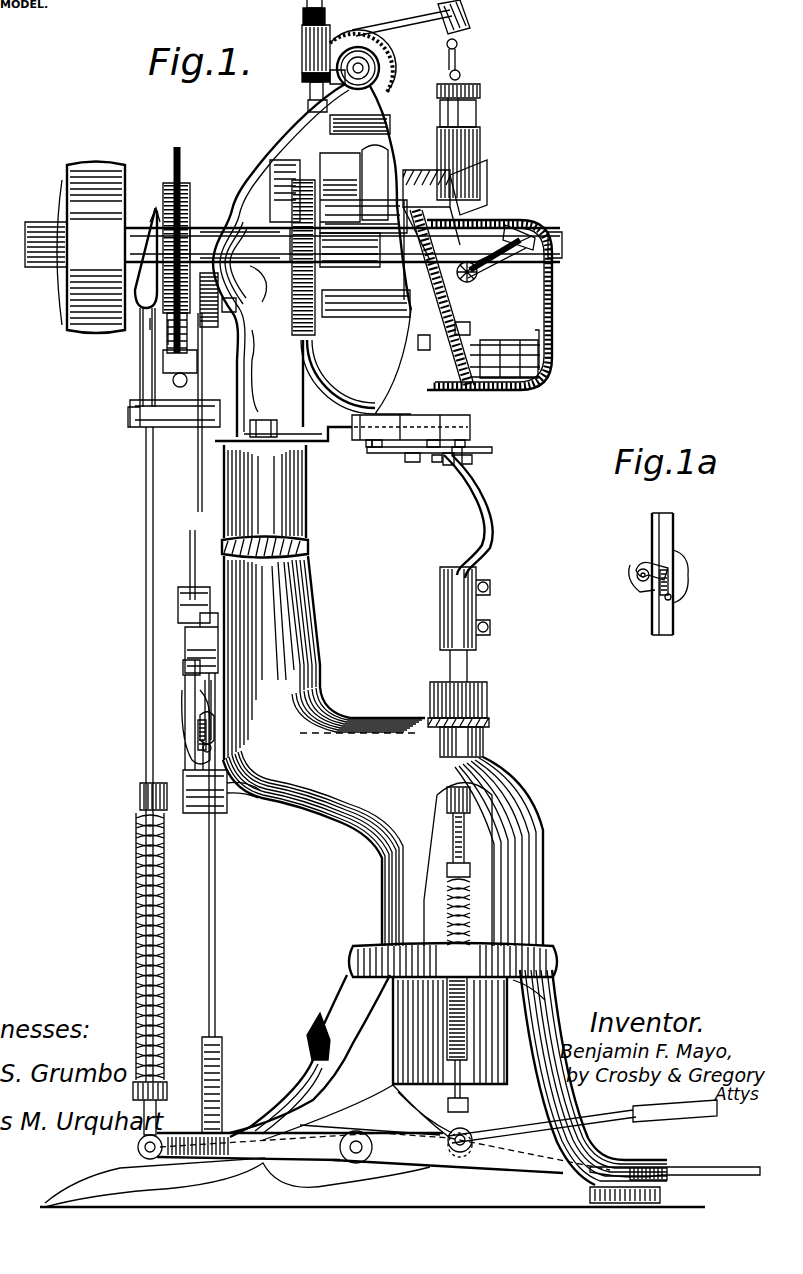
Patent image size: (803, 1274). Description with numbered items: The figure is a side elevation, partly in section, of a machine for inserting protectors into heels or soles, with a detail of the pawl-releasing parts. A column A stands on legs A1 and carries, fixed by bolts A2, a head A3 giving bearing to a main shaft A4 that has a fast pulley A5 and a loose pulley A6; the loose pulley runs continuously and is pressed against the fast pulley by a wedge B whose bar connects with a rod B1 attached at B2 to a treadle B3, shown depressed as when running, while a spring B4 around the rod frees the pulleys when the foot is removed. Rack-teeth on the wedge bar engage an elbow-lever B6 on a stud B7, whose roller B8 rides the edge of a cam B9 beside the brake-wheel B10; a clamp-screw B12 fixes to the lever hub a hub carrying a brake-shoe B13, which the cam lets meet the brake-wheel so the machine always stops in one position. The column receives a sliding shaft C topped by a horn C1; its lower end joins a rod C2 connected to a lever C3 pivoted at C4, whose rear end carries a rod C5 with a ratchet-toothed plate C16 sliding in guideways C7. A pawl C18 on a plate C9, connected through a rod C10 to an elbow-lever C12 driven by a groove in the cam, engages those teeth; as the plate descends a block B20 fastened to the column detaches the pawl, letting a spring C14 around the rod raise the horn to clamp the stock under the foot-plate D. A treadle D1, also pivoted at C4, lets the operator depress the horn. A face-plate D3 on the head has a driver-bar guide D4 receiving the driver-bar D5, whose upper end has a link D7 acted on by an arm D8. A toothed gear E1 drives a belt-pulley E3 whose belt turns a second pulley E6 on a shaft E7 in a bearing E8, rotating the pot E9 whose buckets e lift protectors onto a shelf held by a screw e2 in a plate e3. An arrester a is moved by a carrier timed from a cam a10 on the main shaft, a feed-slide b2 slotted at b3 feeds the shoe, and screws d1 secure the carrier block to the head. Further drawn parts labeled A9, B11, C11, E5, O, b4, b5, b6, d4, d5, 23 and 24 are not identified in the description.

In FIG. 1, the column A is at (318, 630).
In FIG. 1, the legs A1 is at (552, 995).
In FIG. 1, the bolts A2 is at (262, 432).
In FIG. 1, the head A3 is at (262, 178).
In FIG. 1, the main shaft A4 is at (412, 145).
In FIG. 1, the fast pulley A5 is at (66, 186).
In FIG. 1, the loose pulley A6 is at (162, 190).
In FIG. 1, the casing wall A9 is at (322, 354).
In FIG. 1, the wedge B is at (226, 378).
In FIG. 1, the rod B1 is at (146, 648).
In FIG. 1, the attachment point B2 is at (180, 387).
In FIG. 1, the treadle B3 is at (232, 1132).
In FIG. 1, the spring B4 is at (140, 958).
In FIG. 1, the elbow-lever B6 is at (156, 216).
In FIG. 1, the stud B7 is at (209, 300).
In FIG. 1, the roller or stud B8 is at (188, 200).
In FIG. 1, the cam B9 is at (186, 178).
In FIG. 1, the brake-wheel B10 is at (180, 148).
In FIG. 1, the link B11 is at (150, 325).
In FIG. 1, the clamp-screw B12 is at (160, 385).
In FIG. 1, the brake-shoe B13 is at (170, 330).
In FIG. 1, the block B20 is at (226, 712).
In FIG. 1A, the block B20 is at (638, 572).
In FIG. 1, the sliding shaft C is at (240, 324).
In FIG. 1, the horn C1 is at (486, 528).
In FIG. 1, the rod C2 is at (452, 1100).
In FIG. 1, the lever C3 is at (282, 1175).
In FIG. 1, the pivot C4 is at (370, 1140).
In FIG. 1, the rod C5 is at (206, 934).
In FIG. 1, the guideways C7 is at (222, 812).
In FIG. 1, the plate C9 is at (190, 700).
In FIG. 1A, the plate C9 is at (672, 548).
In FIG. 1, the rod C10 is at (196, 490).
In FIG. 1, the block C11 is at (192, 676).
In FIG. 1, the elbow-lever C12 is at (238, 304).
In FIG. 1, the spring C14 is at (470, 905).
In FIG. 1, the ratchet-toothed plate C16 is at (212, 760).
In FIG. 1A, the ratchet-toothed plate C16 is at (652, 612).
In FIG. 1, the pawl or engaging device C18 is at (198, 736).
In FIG. 1A, the pawl or engaging device C18 is at (672, 584).
In FIG. 1, the foot-plate D is at (364, 50).
In FIG. 1, the treadle D1 is at (618, 1112).
In FIG. 1, the face-plate D3 is at (432, 150).
In FIG. 1, the driver-bar guide D4 is at (482, 140).
In FIG. 1, the driver-bar D5 is at (474, 114).
In FIG. 1, the link or stud D7 is at (472, 68).
In FIG. 1, the arm D8 is at (403, 10).
In FIG. 1, the toothed gear E1 is at (288, 200).
In FIG. 1, the belt-pulley E3 is at (355, 250).
In FIG. 1, the plate E5 is at (330, 190).
In FIG. 1, the second pulley E6 is at (290, 322).
In FIG. 1, the shaft E7 is at (244, 280).
In FIG. 1, the bearing E8 is at (348, 354).
In FIG. 1, the pot E9 is at (544, 372).
In FIG. 1, the chute O is at (480, 192).
In FIG. 1, the arrester a is at (412, 424).
In FIG. 1, the cam a10 is at (380, 200).
In FIG. 1, the feed-slide b2 is at (410, 450).
In FIG. 1, the slot b3 is at (492, 450).
In FIG. 1, the block b4 is at (468, 464).
In FIG. 1, the block b5 is at (448, 465).
In FIG. 1, the block b6 is at (436, 462).
In FIG. 1, the screws d1 is at (380, 416).
In FIG. 1, the block d4 is at (455, 425).
In FIG. 1, the block d5 is at (368, 448).
In FIG. 1, the buckets e is at (500, 226).
In FIG. 1, the screw e2 is at (470, 330).
In FIG. 1, the plate e3 is at (410, 345).
In FIG. 1, the star wheel 23 is at (480, 282).
In FIG. 1, the wall 24 is at (540, 350).